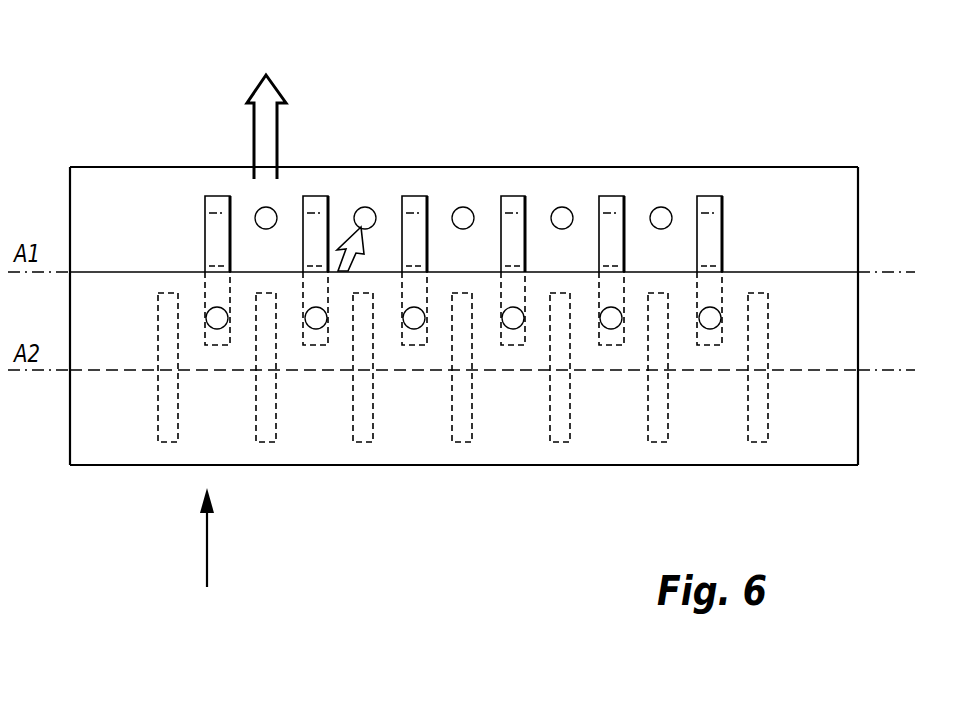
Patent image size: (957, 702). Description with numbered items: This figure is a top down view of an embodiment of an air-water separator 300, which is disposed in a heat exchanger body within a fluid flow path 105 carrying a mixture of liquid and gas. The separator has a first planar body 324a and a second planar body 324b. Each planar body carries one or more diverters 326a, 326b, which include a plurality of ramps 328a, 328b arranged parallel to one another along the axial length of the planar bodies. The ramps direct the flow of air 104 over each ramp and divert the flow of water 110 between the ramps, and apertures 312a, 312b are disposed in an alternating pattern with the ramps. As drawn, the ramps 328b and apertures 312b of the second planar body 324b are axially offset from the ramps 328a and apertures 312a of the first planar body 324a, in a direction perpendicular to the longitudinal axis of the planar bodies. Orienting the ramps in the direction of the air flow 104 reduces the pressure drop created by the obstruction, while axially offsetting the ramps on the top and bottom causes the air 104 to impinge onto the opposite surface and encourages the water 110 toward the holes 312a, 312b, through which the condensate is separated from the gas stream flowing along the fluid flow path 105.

The air-water separator 300 is at (90, 119).
The first planar body 324a is at (138, 190).
The second planar body 324b is at (113, 425).
The gas flow path 104 is at (254, 141).
The fluid flow path 105 is at (205, 560).
The condensate flow path 110 is at (340, 250).
The apertures of the first planar body 312a is at (365, 218).
The apertures of the second planar body 312b is at (610, 320).
The diverter of the first planar body 326a is at (525, 207).
The diverter of the second planar body 326b is at (272, 418).
The ramps of the first planar body 328a is at (611, 158).
The ramps of the second planar body 328b is at (369, 476).